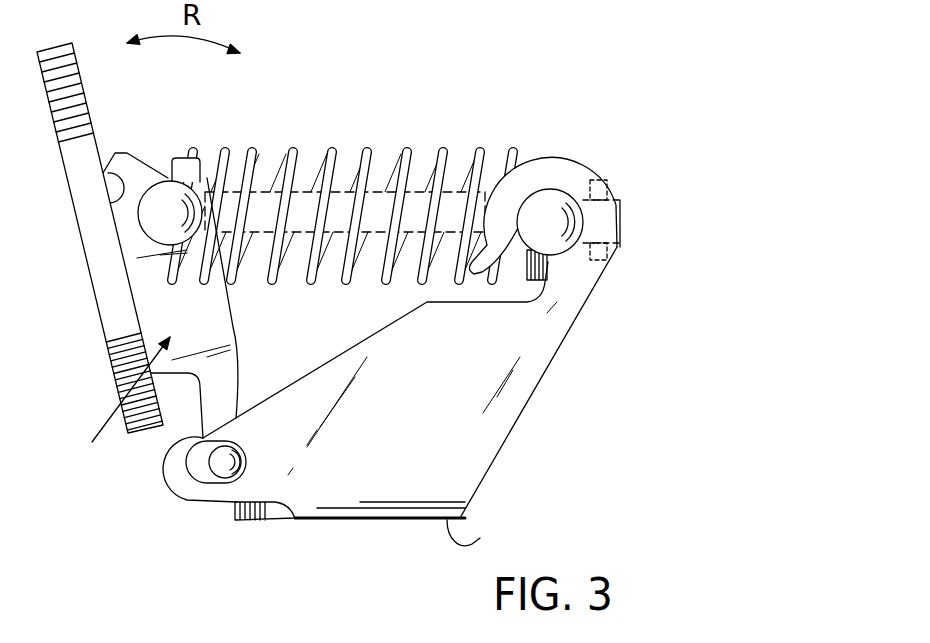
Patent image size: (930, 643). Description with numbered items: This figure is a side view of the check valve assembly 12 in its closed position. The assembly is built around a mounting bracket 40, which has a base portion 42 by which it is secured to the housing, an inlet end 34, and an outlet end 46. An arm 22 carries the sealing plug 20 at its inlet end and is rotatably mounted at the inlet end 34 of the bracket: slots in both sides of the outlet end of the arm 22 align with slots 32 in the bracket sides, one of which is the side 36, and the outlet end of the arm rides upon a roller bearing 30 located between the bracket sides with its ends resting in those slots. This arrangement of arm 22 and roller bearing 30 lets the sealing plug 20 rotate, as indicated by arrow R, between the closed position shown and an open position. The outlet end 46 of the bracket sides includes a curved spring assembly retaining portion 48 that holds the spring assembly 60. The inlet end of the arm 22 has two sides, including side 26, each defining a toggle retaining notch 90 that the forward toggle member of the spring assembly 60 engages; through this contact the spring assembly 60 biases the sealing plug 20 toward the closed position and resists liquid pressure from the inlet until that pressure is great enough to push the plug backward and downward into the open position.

The check valve assembly 12 is at (553, 140).
The sealing plug 20 is at (103, 331).
The arm 22 is at (121, 408).
The side 26 is at (218, 338).
The roller bearing 30 is at (223, 463).
The slots 32 is at (192, 463).
The inlet end 34 is at (298, 464).
The side 36 is at (523, 409).
The mounting bracket 40 is at (382, 523).
The base portion 42 is at (485, 526).
The outlet end 46 is at (557, 356).
The curved spring assembly retaining portion 48 is at (563, 170).
The spring assembly 60 is at (335, 143).
The toggle retaining notches 90 is at (163, 173).